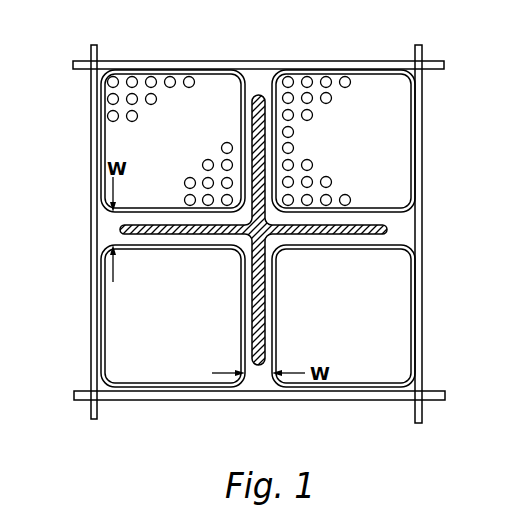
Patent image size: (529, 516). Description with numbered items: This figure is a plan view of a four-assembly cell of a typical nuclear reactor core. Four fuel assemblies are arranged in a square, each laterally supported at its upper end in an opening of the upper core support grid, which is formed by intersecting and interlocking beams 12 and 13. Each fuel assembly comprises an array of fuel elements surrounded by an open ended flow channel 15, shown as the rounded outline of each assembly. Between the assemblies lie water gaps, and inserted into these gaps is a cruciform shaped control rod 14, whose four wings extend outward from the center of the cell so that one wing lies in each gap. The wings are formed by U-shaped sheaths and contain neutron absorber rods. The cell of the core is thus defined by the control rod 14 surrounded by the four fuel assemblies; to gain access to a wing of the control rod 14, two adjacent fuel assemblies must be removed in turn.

The beam 12 is at (423, 183).
The beam 13 is at (338, 62).
The control rod 14 is at (398, 228).
The flow channel 15 is at (423, 312).